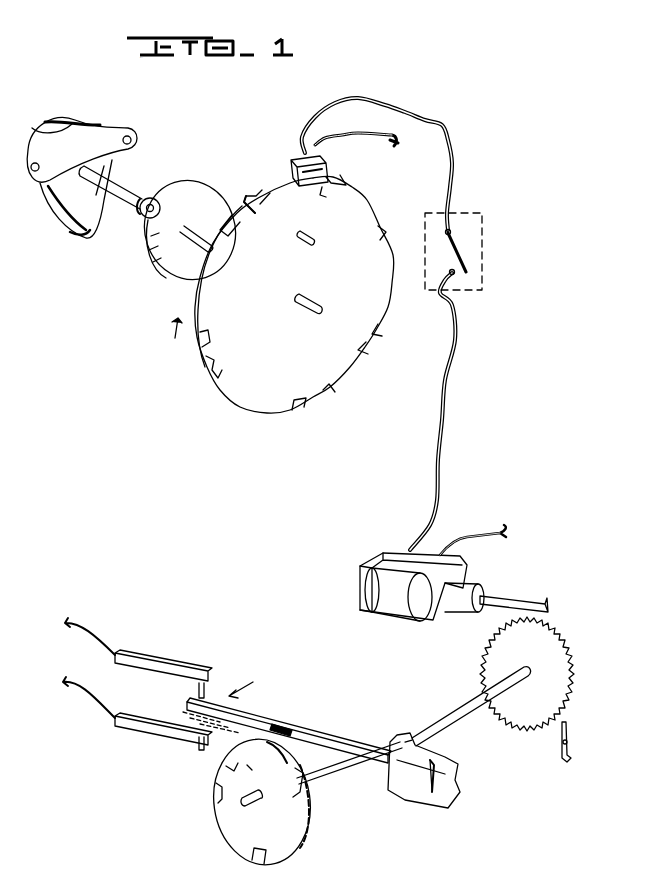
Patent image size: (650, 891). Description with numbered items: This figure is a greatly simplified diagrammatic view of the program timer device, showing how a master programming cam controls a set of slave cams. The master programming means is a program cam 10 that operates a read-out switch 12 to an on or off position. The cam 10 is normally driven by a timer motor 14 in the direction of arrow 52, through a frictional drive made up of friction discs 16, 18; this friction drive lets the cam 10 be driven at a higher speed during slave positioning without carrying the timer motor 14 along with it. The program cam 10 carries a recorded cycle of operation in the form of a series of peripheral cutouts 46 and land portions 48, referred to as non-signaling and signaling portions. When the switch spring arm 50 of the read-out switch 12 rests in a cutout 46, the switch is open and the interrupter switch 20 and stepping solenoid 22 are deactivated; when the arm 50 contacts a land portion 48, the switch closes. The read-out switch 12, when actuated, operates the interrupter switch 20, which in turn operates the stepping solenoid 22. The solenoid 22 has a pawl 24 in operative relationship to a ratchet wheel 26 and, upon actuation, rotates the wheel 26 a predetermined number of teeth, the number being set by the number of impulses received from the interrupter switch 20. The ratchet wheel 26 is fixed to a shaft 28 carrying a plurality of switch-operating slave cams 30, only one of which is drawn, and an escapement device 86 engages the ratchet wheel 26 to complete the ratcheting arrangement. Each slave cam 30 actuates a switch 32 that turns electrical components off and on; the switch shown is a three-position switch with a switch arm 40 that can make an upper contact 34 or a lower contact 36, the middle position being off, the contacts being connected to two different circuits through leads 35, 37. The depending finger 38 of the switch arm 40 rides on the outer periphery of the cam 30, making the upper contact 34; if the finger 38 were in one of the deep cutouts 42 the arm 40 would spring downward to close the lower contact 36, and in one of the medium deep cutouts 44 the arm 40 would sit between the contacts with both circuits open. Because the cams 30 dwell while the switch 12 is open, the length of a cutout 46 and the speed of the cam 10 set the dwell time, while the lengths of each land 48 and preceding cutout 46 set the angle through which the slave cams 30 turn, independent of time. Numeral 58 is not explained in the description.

The program cam 10 is at (258, 400).
The read-out switch 12 is at (318, 172).
The timer motor 14 is at (72, 116).
The friction disc 16 is at (140, 214).
The friction disc 18 is at (158, 268).
The interrupter switch 20 is at (460, 253).
The stepping solenoid 22 is at (380, 560).
The pawl 24 is at (500, 600).
The ratchet wheel 26 is at (557, 681).
The shaft 28 is at (438, 710).
The switch-operating slave cam 30 is at (303, 830).
The switch 32 is at (230, 703).
The upper contact 34 is at (196, 688).
The lead 35 is at (97, 629).
The lower contact 36 is at (200, 740).
The lead 37 is at (86, 688).
The depending finger 38 is at (283, 738).
The switch arm 40 is at (310, 730).
The deep cutout 42 is at (222, 767).
The medium deep cutout 44 is at (217, 774).
The peripheral cutout 46 is at (318, 190).
The land portion 48 is at (264, 186).
The switch spring arm 50 is at (293, 162).
The arrow 52 is at (171, 337).
The pin 58 is at (314, 242).
The escapement device 86 is at (568, 736).